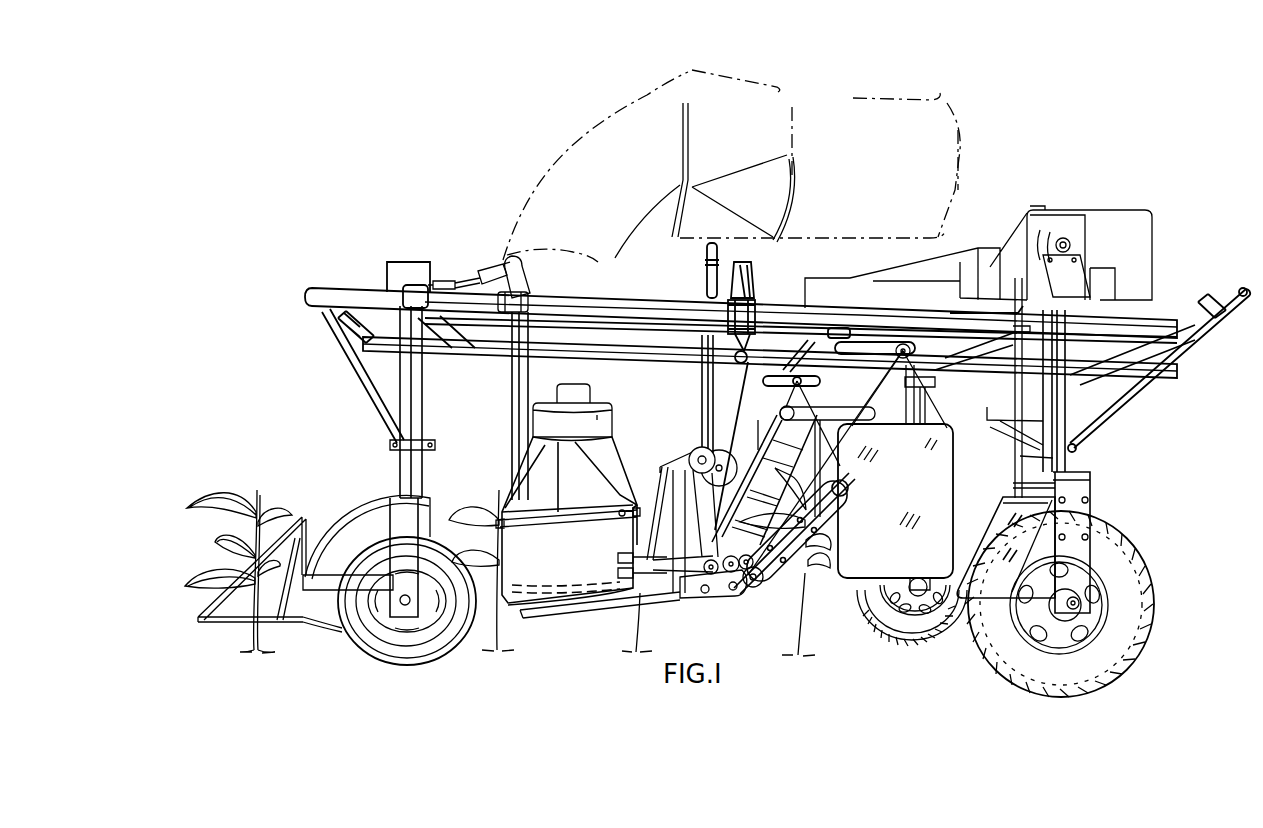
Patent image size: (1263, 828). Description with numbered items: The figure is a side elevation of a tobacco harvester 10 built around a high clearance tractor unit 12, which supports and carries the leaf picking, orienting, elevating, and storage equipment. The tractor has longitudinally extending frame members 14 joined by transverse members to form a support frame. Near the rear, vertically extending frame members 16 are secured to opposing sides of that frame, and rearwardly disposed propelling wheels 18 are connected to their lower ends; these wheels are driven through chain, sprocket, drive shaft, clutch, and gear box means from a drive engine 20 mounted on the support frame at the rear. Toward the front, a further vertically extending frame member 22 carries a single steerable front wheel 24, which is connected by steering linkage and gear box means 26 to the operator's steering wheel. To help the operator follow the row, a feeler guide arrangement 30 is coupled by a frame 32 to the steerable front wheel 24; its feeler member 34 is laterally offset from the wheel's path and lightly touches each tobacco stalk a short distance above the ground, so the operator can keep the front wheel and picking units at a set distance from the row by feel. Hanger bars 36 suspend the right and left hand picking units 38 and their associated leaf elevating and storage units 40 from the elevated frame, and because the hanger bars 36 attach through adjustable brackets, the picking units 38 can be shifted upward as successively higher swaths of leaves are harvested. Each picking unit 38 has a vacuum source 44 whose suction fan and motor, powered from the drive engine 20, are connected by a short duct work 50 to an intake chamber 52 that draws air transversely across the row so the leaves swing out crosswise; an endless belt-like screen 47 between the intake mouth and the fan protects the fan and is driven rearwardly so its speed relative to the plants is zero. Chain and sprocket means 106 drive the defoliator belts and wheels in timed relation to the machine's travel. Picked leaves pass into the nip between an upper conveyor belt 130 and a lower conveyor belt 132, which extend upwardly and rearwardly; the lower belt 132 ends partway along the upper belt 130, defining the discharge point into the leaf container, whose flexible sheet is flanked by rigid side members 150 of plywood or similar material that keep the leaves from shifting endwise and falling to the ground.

The tobacco harvester 10 is at (288, 231).
The high clearance tractor unit 12 is at (622, 284).
The longitudinally extending frame members 14 is at (590, 310).
The vertically extending frame members 16 is at (937, 401).
The propelling wheels 18 is at (862, 598).
The drive engine 20 is at (1145, 258).
The vertically extending frame member 22 is at (422, 411).
The steerable front wheel 24 is at (358, 645).
The steering linkage and gear box means 26 is at (446, 271).
The feeler guide arrangement 30 is at (229, 620).
The frame 32 is at (235, 568).
The feeler member 34 is at (306, 622).
The hanger bars 36 is at (513, 392).
The picking units 38 is at (629, 467).
The leaf elevating and storage units 40 is at (822, 406).
The vacuum source 44 is at (595, 408).
The endless belt-like screen 47 is at (700, 492).
The duct work 50 is at (510, 492).
The intake chamber 52 is at (553, 608).
The chain and sprocket means 106 is at (690, 438).
The upper conveyor belt 130 is at (795, 522).
The lower conveyor belt 132 is at (763, 582).
The rigid side members 150 is at (948, 490).